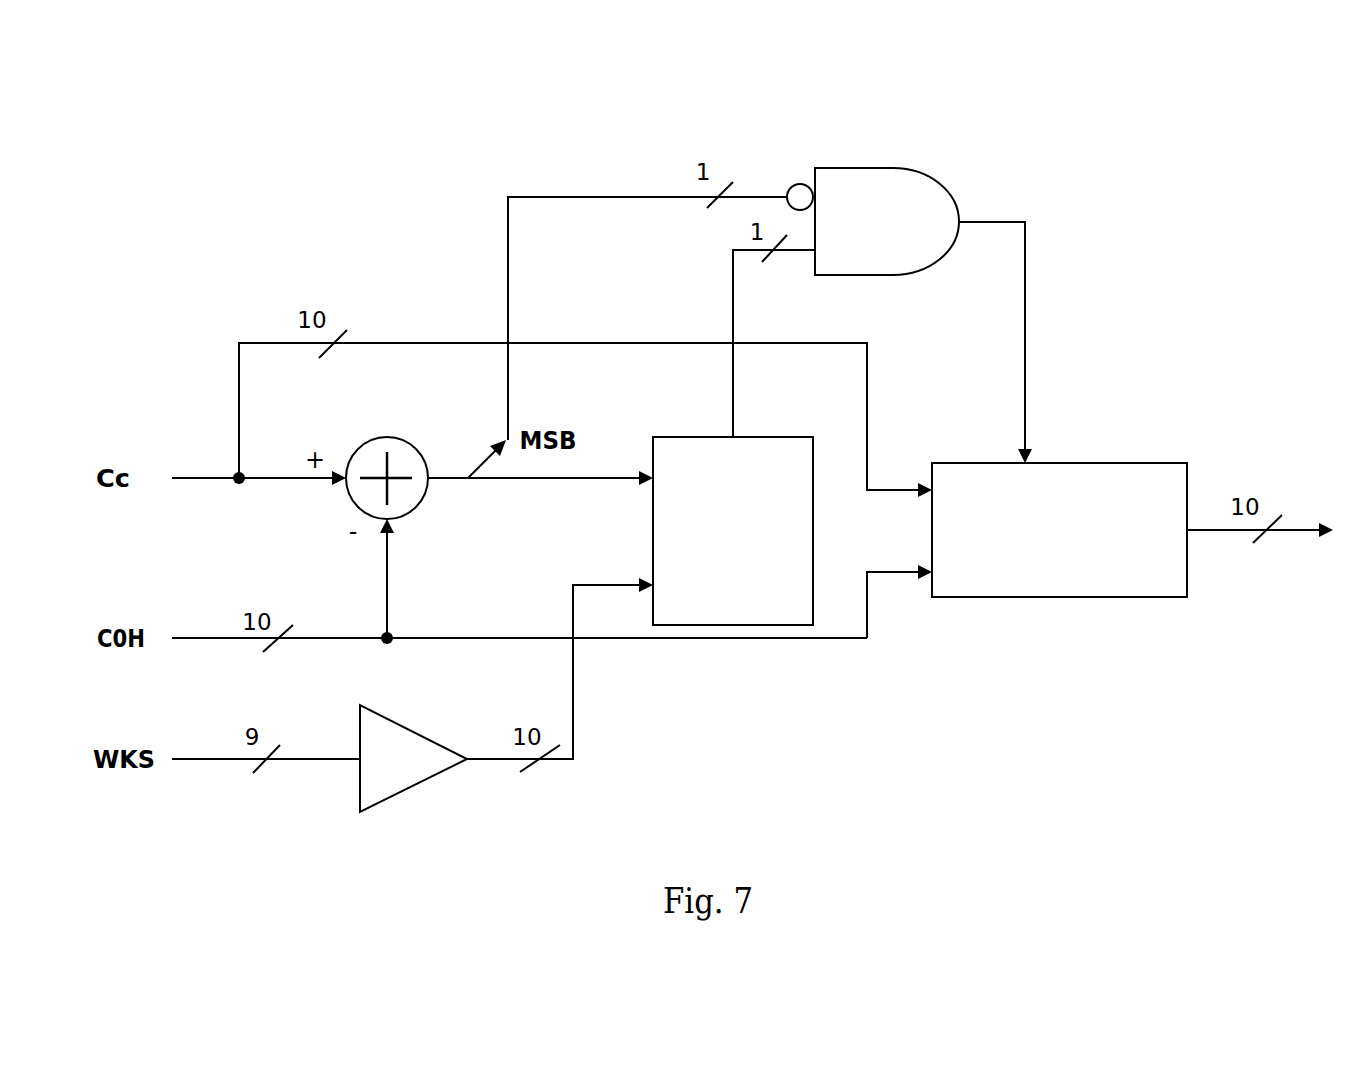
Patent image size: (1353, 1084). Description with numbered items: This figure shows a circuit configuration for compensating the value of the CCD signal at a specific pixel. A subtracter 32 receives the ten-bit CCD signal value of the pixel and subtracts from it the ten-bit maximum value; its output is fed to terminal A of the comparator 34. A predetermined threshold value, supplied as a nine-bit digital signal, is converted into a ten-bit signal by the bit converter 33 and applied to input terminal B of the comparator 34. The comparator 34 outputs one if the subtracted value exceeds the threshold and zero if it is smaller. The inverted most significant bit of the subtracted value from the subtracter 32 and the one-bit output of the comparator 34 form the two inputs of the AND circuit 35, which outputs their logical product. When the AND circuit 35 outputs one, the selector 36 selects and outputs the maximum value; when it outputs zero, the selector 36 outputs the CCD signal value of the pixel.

The subtracter 32 is at (415, 450).
The bit converter 33 is at (417, 732).
The comparator (CMP) 34 is at (780, 437).
The AND circuit 35 is at (882, 168).
The selector 36 is at (1113, 463).